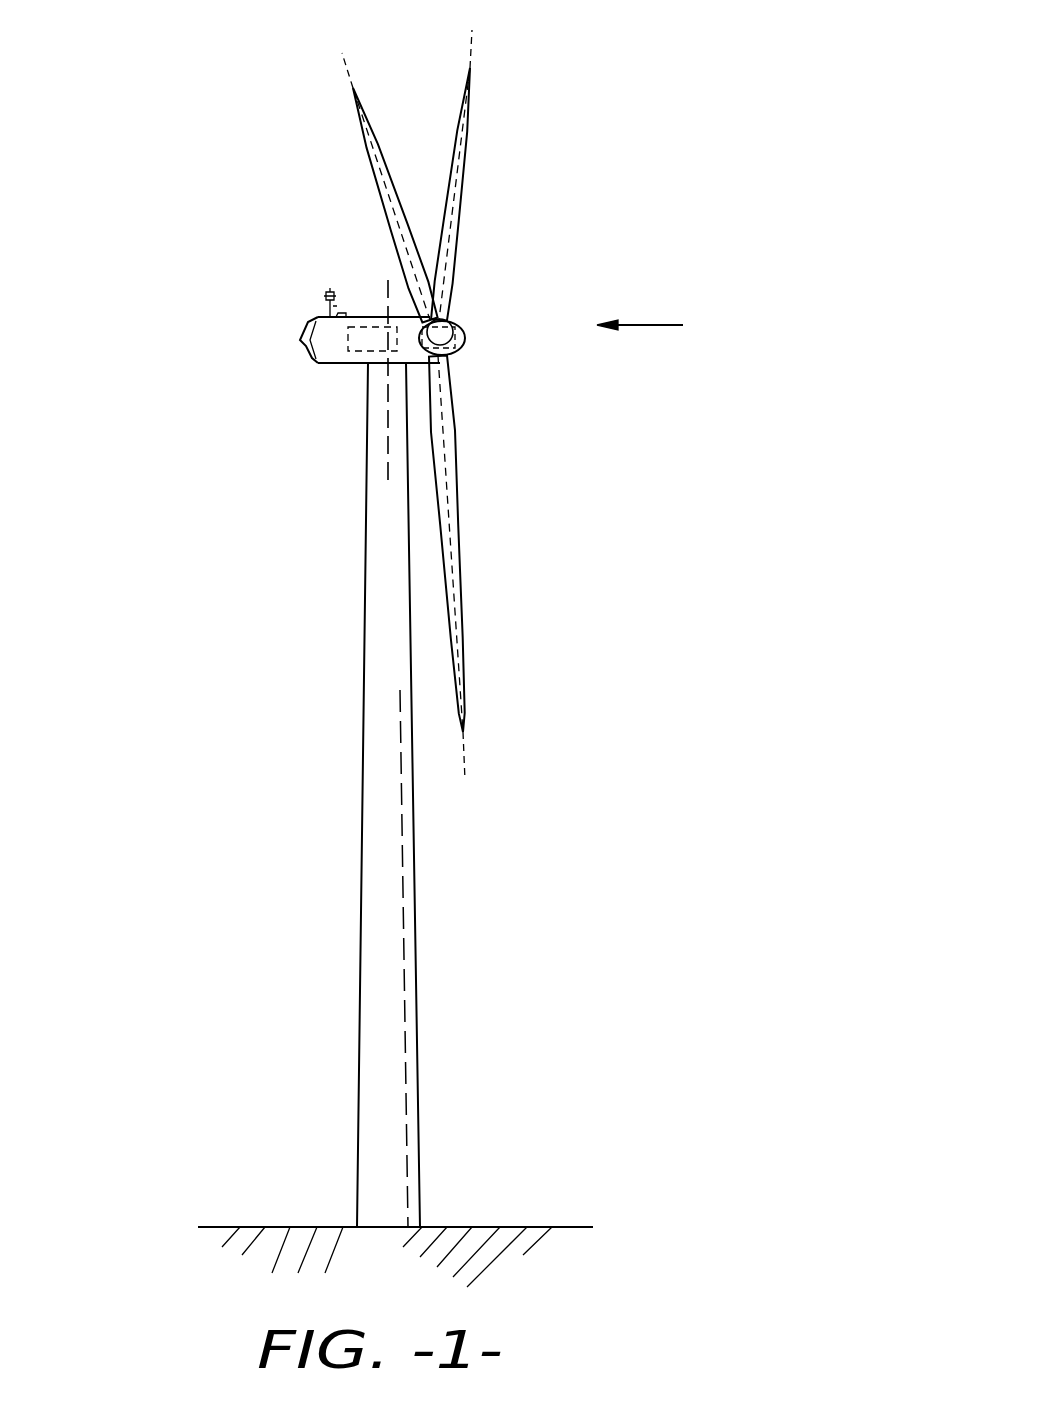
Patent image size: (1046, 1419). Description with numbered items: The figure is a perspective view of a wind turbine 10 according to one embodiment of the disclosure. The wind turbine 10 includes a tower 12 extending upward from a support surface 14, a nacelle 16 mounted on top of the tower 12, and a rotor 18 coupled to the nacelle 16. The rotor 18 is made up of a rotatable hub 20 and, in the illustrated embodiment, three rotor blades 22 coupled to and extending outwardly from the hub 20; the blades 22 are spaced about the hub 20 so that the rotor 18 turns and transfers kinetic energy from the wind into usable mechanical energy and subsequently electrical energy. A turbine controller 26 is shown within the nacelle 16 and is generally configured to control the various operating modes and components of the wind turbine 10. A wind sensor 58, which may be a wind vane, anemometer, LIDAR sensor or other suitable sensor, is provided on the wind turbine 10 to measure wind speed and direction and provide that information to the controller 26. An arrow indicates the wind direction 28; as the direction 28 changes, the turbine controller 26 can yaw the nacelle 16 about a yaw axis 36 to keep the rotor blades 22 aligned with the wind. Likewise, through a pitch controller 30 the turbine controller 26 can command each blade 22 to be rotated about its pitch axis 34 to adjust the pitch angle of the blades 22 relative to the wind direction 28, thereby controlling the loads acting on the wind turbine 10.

The wind turbine 10 is at (463, 643).
The tower 12 is at (372, 912).
The support surface 14 is at (283, 1227).
The nacelle 16 is at (342, 363).
The rotor 18 is at (418, 411).
The rotatable hub 20 is at (467, 347).
The rotor blade 22 is at (393, 183).
The turbine controller 26 is at (363, 327).
The wind direction 28 is at (655, 325).
The pitch controller 30 is at (465, 328).
The pitch axis 34 is at (347, 72).
The yaw axis 36 is at (387, 424).
The wind sensor 58 is at (326, 308).